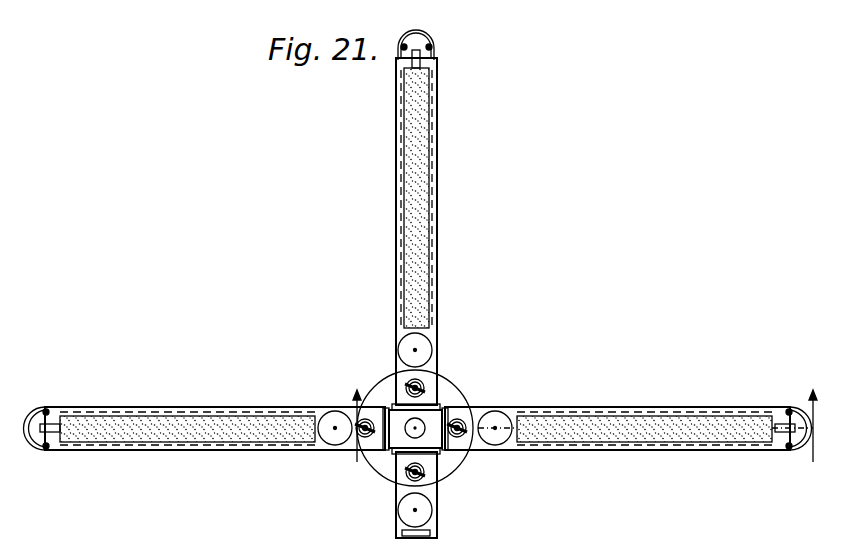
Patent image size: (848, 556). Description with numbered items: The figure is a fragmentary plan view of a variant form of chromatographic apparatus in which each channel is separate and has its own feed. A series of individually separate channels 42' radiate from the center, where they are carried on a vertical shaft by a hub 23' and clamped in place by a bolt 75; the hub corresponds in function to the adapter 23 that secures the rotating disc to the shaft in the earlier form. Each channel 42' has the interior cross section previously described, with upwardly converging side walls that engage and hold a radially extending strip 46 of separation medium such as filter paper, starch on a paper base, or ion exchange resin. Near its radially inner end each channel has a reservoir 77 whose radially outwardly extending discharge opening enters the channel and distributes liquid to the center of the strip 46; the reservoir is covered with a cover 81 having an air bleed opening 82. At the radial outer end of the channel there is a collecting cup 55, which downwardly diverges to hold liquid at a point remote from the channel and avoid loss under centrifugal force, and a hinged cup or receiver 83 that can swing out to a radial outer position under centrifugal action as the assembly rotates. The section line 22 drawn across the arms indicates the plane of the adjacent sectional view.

The section line 22 is at (431, 434).
The adapter 23 is at (441, 410).
The hub 23' is at (461, 414).
The channel 42' is at (593, 254).
The strip of separation medium 46 is at (640, 430).
The collecting cup 55 is at (437, 45).
The bolt 75 is at (462, 445).
The reservoir 77 is at (425, 512).
The cover 81 is at (382, 468).
The air bleed opening 82 is at (411, 430).
The receiver 83 is at (795, 450).